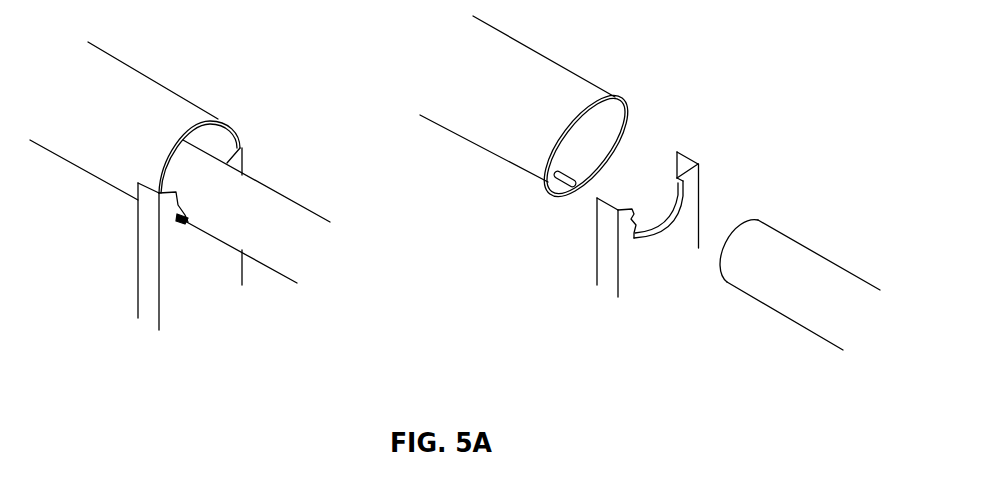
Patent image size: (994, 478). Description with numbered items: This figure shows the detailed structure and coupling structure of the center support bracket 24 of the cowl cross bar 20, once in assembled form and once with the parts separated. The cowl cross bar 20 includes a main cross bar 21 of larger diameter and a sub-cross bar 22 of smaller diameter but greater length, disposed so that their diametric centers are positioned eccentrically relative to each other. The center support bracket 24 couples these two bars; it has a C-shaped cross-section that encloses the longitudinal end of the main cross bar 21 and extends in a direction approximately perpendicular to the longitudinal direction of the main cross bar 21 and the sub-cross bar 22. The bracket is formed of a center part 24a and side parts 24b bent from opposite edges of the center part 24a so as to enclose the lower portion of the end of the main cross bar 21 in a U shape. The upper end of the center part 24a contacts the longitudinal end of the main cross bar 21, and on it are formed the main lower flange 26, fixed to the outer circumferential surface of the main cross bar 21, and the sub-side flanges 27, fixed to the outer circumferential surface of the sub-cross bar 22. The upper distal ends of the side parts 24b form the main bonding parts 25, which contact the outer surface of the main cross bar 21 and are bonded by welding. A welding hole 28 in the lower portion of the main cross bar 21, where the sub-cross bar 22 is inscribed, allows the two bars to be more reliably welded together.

The cowl cross bar 20 is at (657, 107).
The main cross bar 21 is at (138, 83).
The sub-cross bar 22 is at (292, 202).
The center support bracket 24 is at (252, 160).
The center part 24a is at (195, 290).
The side parts 24b is at (148, 270).
The main bonding parts 25 is at (597, 203).
The main lower flange 26 is at (670, 230).
The sub-side flanges 27 is at (197, 127).
The welding hole 28 is at (553, 181).